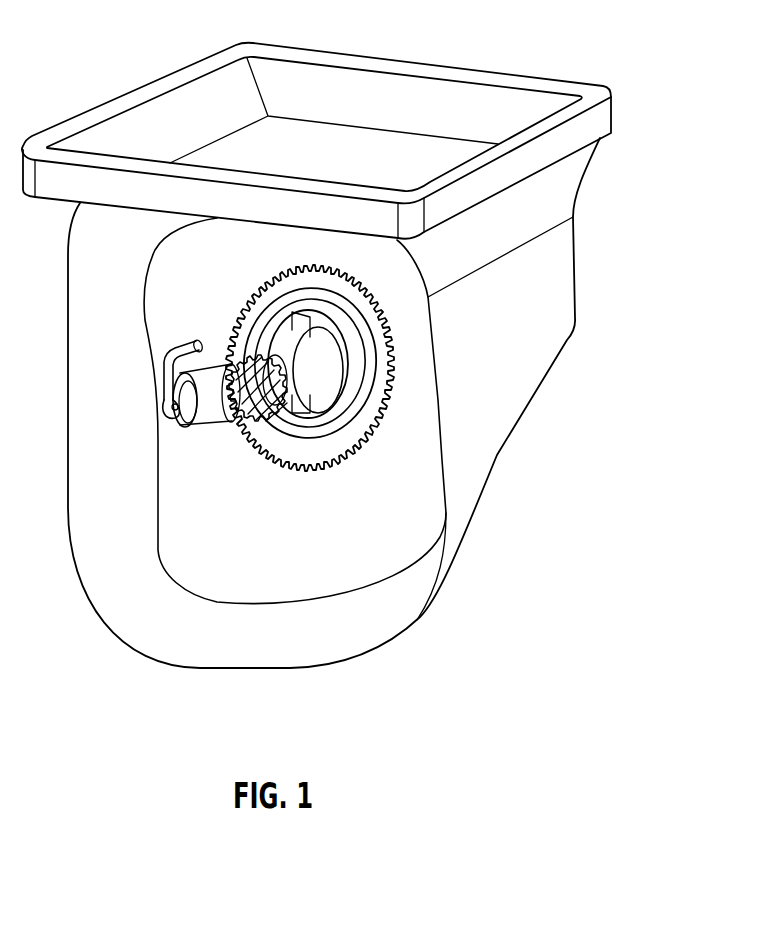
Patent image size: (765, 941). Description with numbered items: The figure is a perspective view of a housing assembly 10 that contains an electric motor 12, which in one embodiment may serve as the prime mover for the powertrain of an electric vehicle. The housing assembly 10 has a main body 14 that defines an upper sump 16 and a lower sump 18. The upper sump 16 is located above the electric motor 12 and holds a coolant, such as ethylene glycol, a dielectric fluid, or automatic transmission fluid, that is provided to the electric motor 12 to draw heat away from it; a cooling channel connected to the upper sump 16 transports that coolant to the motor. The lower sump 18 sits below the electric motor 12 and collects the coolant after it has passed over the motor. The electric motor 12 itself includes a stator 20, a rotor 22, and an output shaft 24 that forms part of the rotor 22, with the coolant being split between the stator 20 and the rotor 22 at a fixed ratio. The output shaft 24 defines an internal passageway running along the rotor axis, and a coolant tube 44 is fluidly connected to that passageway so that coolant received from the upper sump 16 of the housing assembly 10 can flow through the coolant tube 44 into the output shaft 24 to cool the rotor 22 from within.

The housing assembly 10 is at (630, 50).
The electric motor 12 is at (395, 330).
The main body 14 is at (539, 319).
The upper sump 16 is at (389, 152).
The lower sump 18 is at (261, 633).
The stator 20 is at (367, 293).
The rotor 22 is at (367, 363).
The output shaft 24 is at (183, 422).
The coolant tube 44 is at (162, 372).